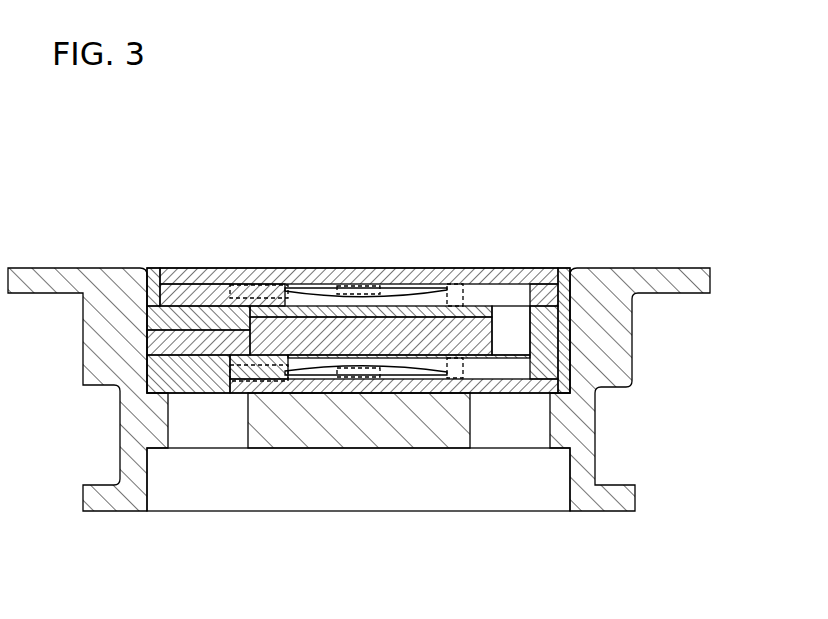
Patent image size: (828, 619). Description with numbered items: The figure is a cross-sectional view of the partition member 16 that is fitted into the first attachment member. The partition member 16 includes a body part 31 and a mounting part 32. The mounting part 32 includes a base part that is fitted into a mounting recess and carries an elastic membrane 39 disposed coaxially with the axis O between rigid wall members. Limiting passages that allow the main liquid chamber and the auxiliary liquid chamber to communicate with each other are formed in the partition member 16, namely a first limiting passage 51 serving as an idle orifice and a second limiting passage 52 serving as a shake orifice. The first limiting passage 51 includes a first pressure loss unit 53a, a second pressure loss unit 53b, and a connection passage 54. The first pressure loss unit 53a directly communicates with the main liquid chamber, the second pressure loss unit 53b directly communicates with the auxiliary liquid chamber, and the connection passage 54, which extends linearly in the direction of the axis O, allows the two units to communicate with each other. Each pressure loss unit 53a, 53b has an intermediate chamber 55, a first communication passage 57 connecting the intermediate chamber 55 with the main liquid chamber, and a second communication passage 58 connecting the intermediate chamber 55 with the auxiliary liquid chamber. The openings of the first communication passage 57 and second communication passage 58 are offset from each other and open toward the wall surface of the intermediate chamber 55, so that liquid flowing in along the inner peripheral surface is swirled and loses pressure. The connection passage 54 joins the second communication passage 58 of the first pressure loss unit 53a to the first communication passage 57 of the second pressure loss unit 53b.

The partition member 16 is at (619, 137).
The body part 31 is at (80, 369).
The mounting part 32 is at (160, 264).
The elastic membrane 39 is at (236, 320).
The first limiting passage 51 is at (504, 383).
The second limiting passage 52 is at (628, 429).
The first pressure loss unit 53a is at (453, 146).
The second pressure loss unit 53b is at (452, 562).
The connection passage 54 is at (526, 316).
The intermediate chamber 55 is at (242, 292).
The first communication passage 57 is at (362, 288).
The second communication passage 58 is at (460, 288).